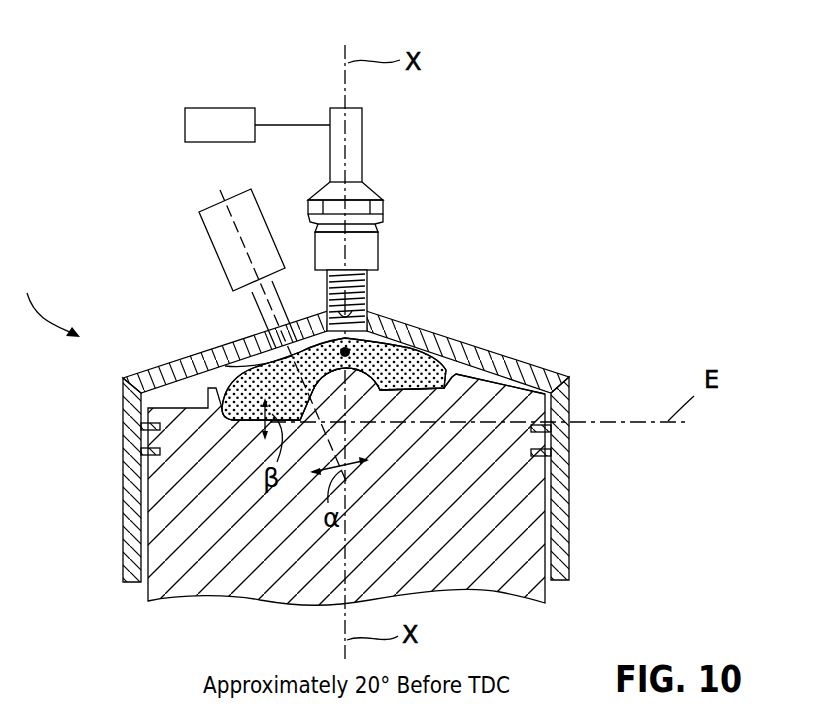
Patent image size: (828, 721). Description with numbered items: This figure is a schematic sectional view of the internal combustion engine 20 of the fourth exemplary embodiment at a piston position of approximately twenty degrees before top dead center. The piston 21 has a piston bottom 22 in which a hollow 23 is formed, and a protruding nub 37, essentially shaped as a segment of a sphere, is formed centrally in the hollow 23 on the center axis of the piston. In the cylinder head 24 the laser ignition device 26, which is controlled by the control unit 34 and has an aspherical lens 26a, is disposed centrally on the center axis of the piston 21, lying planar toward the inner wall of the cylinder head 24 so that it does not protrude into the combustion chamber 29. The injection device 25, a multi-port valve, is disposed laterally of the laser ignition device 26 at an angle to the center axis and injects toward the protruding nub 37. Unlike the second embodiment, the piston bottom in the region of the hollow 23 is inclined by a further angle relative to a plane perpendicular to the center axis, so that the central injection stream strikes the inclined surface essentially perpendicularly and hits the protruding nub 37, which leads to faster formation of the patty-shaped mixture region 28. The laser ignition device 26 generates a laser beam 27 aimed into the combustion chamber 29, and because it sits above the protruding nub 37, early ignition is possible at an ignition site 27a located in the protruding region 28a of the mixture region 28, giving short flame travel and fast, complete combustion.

The internal combustion engine 20 is at (43, 302).
The piston 21 is at (527, 513).
The piston bottom 22 is at (546, 412).
The hollow 23 is at (430, 392).
The cylinder head 24 is at (180, 360).
The injection device 25 is at (223, 240).
The laser ignition device 26 is at (360, 148).
The aspherical lens 26a is at (325, 296).
The laser beam 27 is at (393, 325).
The ignition site 27a is at (455, 375).
The mixture region 28 is at (480, 363).
The protruding region 28a is at (418, 358).
The combustion chamber 29 is at (532, 362).
The control unit 34 is at (220, 108).
The protruding nub 37 is at (232, 357).